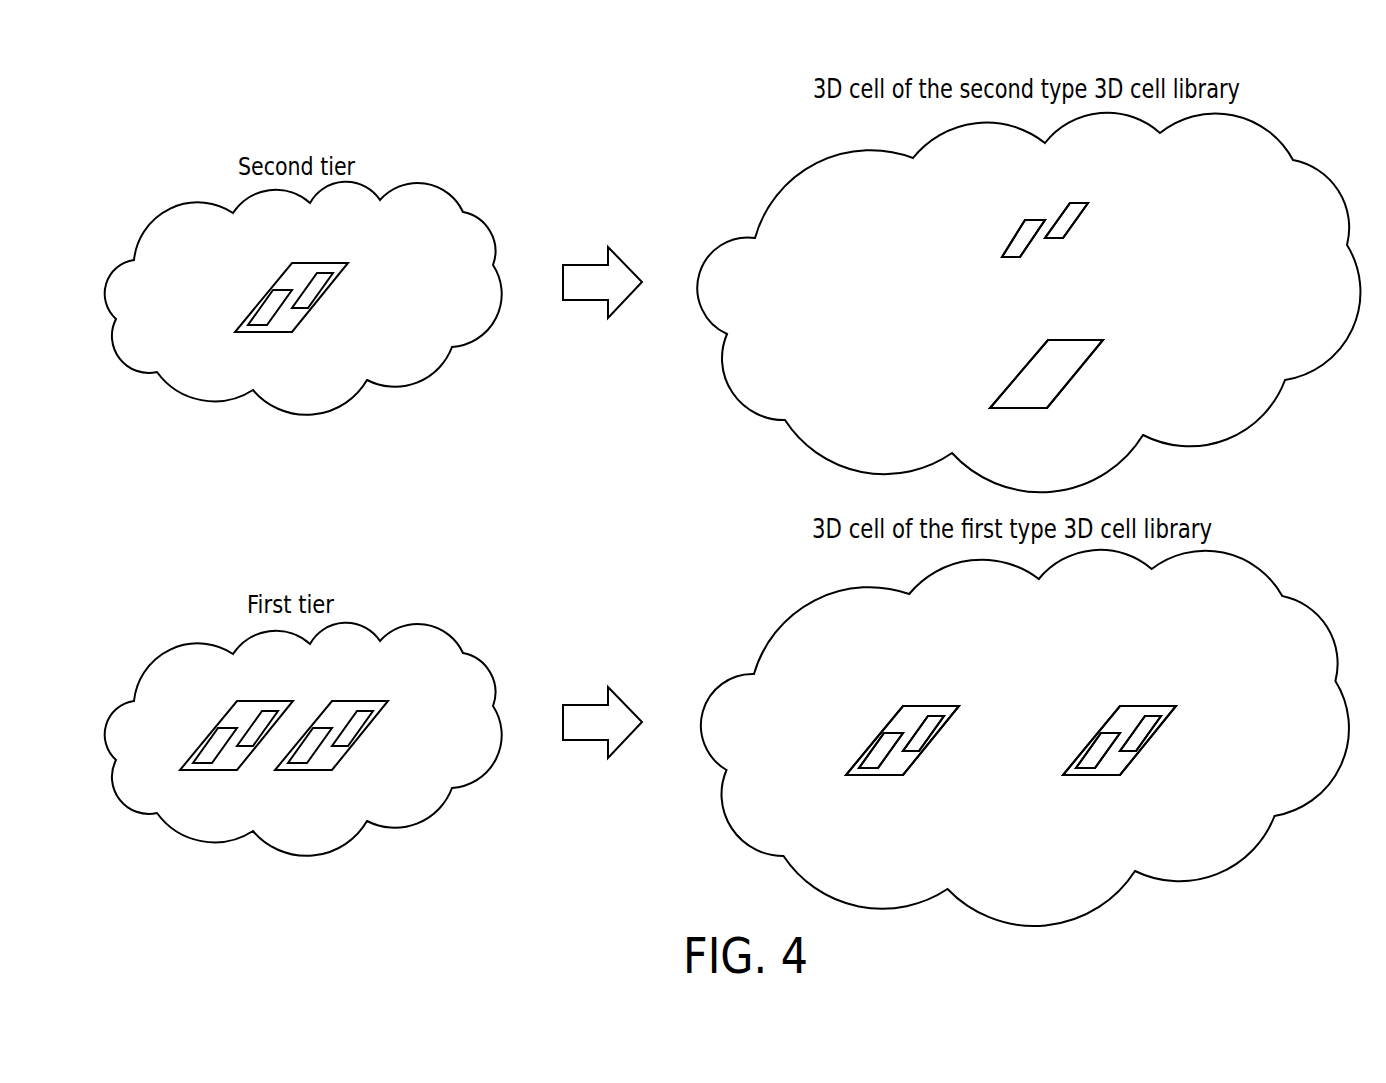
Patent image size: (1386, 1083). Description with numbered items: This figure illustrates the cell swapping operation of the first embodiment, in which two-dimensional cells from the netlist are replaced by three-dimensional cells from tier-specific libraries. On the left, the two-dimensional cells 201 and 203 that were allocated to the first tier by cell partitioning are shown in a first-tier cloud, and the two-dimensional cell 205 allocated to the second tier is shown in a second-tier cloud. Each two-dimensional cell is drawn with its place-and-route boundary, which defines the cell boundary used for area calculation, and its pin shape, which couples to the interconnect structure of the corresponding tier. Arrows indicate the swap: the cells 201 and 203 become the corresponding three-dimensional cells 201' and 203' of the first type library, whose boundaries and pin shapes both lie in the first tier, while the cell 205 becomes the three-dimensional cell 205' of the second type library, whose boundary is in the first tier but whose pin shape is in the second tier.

The 2D cell 201 is at (236, 752).
The 2D cell 203 is at (331, 752).
The 2D cell 205 is at (291, 313).
The 3D cell 201' is at (902, 757).
The 3D cell 203' is at (1119, 757).
The 3D cell 205' is at (1081, 305).